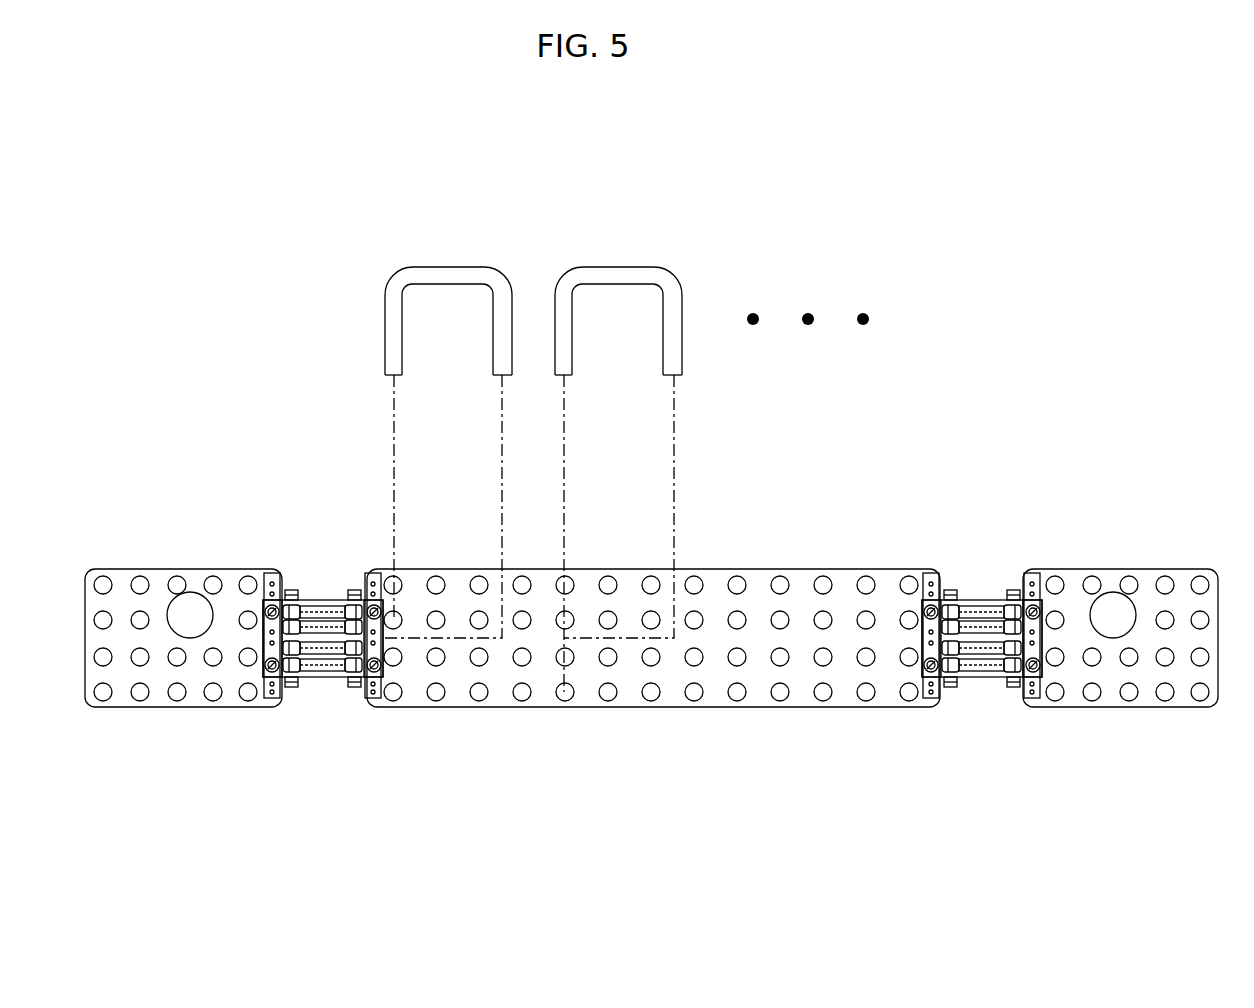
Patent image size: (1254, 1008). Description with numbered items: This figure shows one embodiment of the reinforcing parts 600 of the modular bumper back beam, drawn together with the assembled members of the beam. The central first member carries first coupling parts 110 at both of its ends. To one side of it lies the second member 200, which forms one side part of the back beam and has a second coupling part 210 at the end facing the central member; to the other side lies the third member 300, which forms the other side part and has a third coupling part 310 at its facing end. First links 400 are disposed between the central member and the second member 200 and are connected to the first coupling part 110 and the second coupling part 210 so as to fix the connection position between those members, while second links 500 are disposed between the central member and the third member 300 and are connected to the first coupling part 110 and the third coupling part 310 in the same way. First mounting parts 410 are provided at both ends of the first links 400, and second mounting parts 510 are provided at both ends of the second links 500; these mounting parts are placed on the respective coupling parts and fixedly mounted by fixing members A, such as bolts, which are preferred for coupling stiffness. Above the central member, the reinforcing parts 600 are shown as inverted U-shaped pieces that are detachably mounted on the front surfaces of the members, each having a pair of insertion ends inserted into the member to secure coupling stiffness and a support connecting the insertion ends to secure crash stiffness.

The first coupling part 110 is at (372, 700).
The second member 200 is at (123, 575).
The second coupling part 210 is at (272, 700).
The third member 300 is at (1180, 575).
The third coupling part 310 is at (1033, 700).
The first links 400 is at (318, 600).
The first mounting parts 410 is at (270, 578).
The second links 500 is at (988, 600).
The second mounting parts 510 is at (1032, 578).
The reinforcing part 600 is at (572, 278).
The fixing members A is at (265, 617).